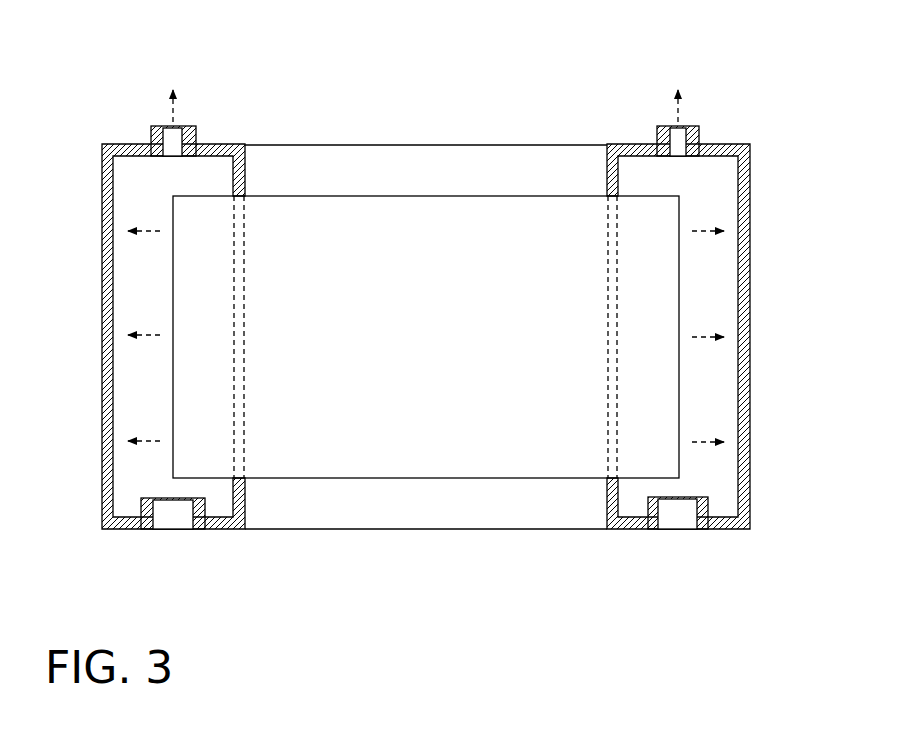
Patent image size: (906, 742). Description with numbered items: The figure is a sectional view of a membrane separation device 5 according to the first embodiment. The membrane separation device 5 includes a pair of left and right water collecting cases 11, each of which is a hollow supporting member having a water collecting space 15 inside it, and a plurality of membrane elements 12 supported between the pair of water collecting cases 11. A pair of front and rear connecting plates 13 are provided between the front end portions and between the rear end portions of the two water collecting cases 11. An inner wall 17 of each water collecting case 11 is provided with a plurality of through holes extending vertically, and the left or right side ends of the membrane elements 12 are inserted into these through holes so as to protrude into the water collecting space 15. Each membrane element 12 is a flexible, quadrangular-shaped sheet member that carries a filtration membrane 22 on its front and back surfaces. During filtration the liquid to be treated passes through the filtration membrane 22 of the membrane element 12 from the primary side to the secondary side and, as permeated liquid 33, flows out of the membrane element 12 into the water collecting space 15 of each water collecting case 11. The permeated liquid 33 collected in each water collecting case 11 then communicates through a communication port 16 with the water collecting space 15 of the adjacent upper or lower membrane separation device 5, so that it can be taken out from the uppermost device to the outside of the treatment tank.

The membrane separation device 5 is at (356, 126).
The water collecting case 11 is at (102, 215).
The membrane element 12 is at (470, 217).
The connecting plate 13 is at (265, 160).
The water collecting space 15 is at (160, 193).
The communication port 16 is at (162, 122).
The inner wall 17 is at (245, 500).
The filtration membrane 22 is at (348, 465).
The permeated liquid 33 is at (165, 103).